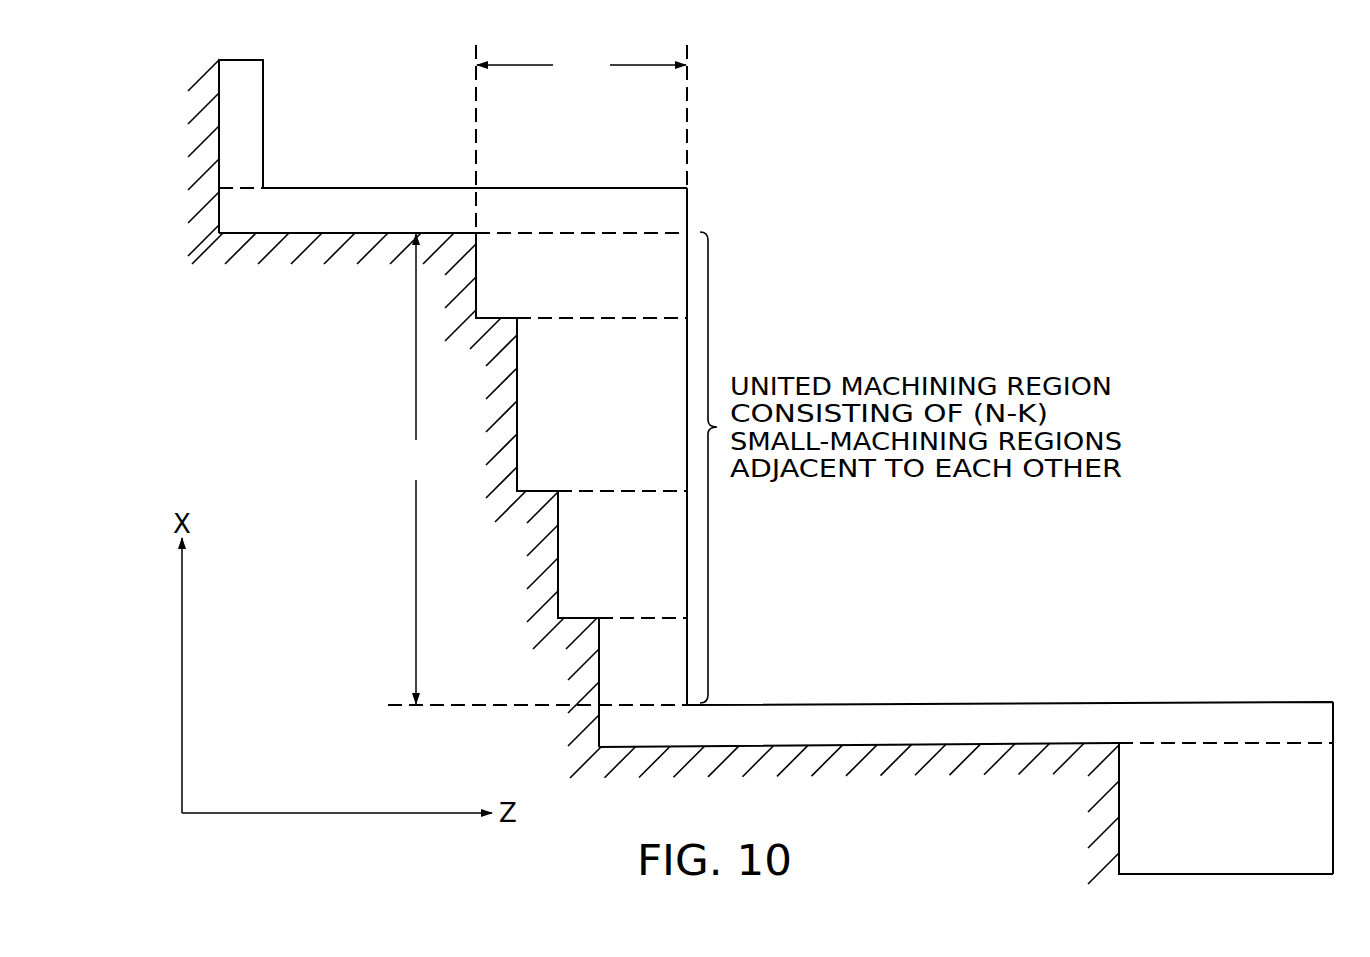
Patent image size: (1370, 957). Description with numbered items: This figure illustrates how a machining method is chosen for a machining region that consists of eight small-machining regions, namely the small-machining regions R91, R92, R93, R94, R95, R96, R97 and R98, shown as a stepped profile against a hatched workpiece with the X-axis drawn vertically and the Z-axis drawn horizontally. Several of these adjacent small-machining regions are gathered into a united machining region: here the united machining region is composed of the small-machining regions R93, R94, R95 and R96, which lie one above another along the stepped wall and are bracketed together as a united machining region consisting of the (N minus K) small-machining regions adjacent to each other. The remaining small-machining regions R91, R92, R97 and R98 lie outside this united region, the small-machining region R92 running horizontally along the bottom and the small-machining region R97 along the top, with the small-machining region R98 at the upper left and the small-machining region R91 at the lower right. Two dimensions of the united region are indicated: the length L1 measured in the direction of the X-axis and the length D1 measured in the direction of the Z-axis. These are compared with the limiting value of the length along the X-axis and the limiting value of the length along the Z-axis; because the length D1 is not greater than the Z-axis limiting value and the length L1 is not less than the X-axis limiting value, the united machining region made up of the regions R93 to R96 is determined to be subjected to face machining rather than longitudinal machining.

The small-machining region R91 is at (1226, 808).
The small-machining region R92 is at (966, 788).
The small-machining region R93 is at (537, 682).
The small-machining region R94 is at (622, 554).
The small-machining region R95 is at (602, 404).
The small-machining region R96 is at (581, 253).
The small-machining region R97 is at (453, 139).
The small-machining region R98 is at (241, 146).
The length in the direction of the Z-axis D1 is at (581, 65).
The length in the direction of the X-axis L1 is at (416, 469).